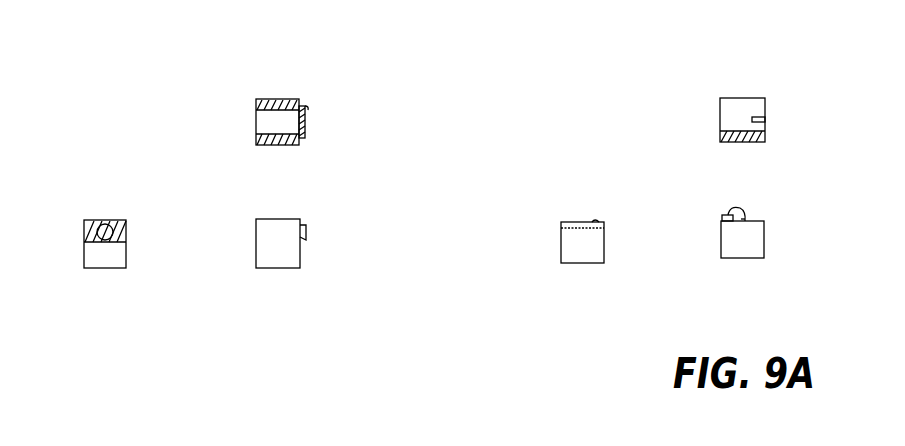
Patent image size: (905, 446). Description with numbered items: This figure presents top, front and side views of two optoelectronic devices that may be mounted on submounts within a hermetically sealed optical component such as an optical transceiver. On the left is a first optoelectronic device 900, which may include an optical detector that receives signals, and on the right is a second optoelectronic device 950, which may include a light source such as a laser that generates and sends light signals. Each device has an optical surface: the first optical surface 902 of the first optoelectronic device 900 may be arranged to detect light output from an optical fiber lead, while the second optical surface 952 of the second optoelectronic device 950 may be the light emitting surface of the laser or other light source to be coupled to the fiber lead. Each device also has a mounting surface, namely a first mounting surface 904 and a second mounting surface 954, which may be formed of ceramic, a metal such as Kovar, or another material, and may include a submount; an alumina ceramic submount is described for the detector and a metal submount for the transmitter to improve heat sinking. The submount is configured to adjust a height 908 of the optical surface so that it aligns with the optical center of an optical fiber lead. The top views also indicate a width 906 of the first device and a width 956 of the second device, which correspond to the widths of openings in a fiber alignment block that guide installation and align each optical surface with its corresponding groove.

The first optoelectronic device 900 is at (121, 62).
The first optical surface 902 is at (306, 125).
The first mounting surface 904 is at (262, 268).
The width of the first optoelectronic device 906 is at (250, 99).
The height of the optical surface 908 is at (138, 228).
The second optoelectronic device 950 is at (517, 82).
The second optical surface 952 is at (768, 121).
The second mounting surface 954 is at (756, 258).
The width of the second optoelectronic device 956 is at (710, 98).